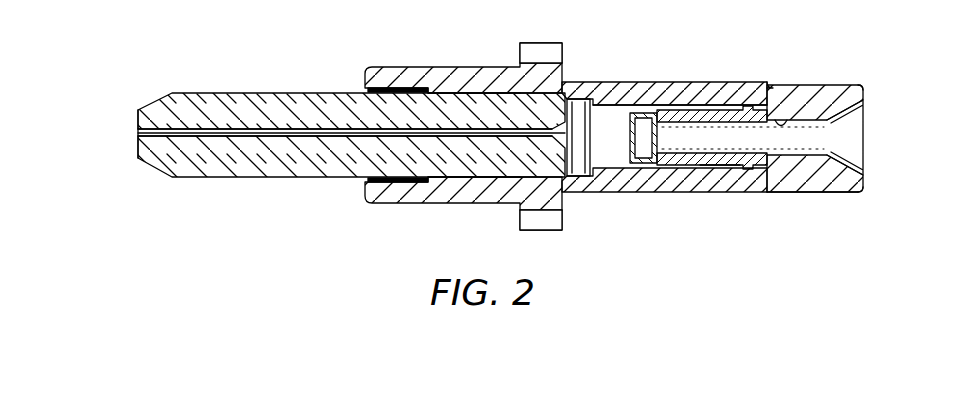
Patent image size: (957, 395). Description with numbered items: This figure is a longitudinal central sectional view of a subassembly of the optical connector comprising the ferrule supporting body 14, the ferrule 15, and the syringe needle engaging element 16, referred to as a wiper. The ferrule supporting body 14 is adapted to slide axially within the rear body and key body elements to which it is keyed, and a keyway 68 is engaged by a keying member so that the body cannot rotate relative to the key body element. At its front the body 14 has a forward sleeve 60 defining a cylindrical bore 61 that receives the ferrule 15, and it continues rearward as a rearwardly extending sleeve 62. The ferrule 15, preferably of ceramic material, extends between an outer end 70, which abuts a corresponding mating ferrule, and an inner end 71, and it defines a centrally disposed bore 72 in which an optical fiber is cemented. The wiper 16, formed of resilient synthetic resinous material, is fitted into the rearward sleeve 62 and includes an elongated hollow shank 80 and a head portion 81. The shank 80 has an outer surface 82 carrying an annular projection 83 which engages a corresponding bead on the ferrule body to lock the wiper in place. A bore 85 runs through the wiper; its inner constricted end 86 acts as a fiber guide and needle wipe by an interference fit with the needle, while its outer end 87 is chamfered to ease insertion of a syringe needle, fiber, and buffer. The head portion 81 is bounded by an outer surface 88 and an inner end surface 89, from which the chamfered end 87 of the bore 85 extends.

The ferrule supporting body 14 is at (464, 70).
The ferrule 15 is at (303, 172).
The syringe needle engaging element (wiper) 16 is at (837, 83).
The forward sleeve 60 is at (403, 203).
The cylindrical bore 61 is at (480, 174).
The rearwardly extending sleeve 62 is at (705, 84).
The keyway 68 is at (566, 50).
The outer end 70 is at (137, 160).
The inner end 71 is at (592, 92).
The centrally disposed bore 72 is at (230, 140).
The elongated hollow shank 80 is at (680, 103).
The head portion 81 is at (822, 180).
The outer surface 82 is at (673, 166).
The annular projection 83 is at (717, 167).
The bore 85 is at (790, 126).
The inner constricted end 86 is at (630, 140).
The outer end 87 is at (855, 135).
The outer surface 88 is at (852, 193).
The inner end surface 89 is at (868, 87).